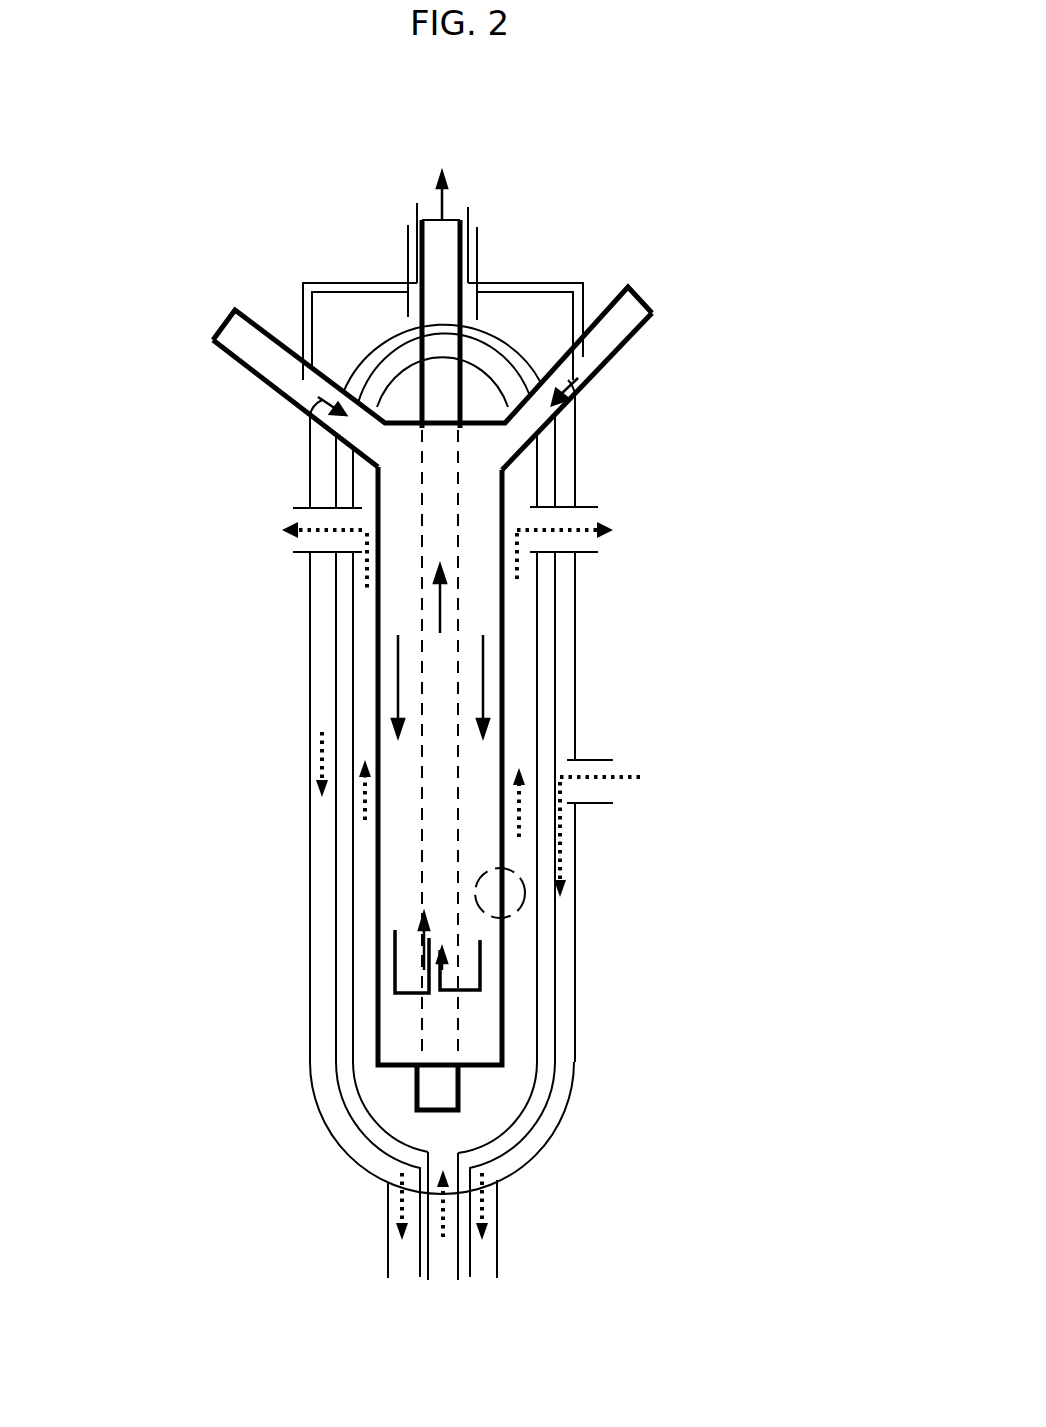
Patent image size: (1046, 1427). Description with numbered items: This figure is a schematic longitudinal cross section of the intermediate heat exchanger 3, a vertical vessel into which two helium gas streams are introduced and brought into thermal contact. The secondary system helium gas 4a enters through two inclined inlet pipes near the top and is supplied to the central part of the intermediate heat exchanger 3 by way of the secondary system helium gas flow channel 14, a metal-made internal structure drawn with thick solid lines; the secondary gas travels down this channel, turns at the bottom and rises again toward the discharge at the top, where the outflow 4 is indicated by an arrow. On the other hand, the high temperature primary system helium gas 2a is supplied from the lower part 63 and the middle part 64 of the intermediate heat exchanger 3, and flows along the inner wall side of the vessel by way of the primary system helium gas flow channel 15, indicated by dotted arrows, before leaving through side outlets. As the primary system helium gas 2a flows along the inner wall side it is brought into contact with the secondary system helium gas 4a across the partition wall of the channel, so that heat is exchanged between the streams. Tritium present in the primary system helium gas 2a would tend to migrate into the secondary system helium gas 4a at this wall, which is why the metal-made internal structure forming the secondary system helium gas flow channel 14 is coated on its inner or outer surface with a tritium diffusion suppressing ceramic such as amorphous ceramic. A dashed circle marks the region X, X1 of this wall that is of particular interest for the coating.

The primary system helium gas 2a is at (613, 537).
The intermediate heat exchanger 3 is at (572, 1083).
The gas discharge pipe 4 is at (447, 182).
The secondary system helium gas 4a is at (583, 397).
The secondary system helium gas flow channel 14 is at (505, 613).
The primary system helium gas flow channel 15 is at (336, 917).
The lower part 63 is at (460, 1285).
The middle part 64 is at (613, 760).
The observation region X is at (591, 964).
The observation position X1 is at (503, 927).